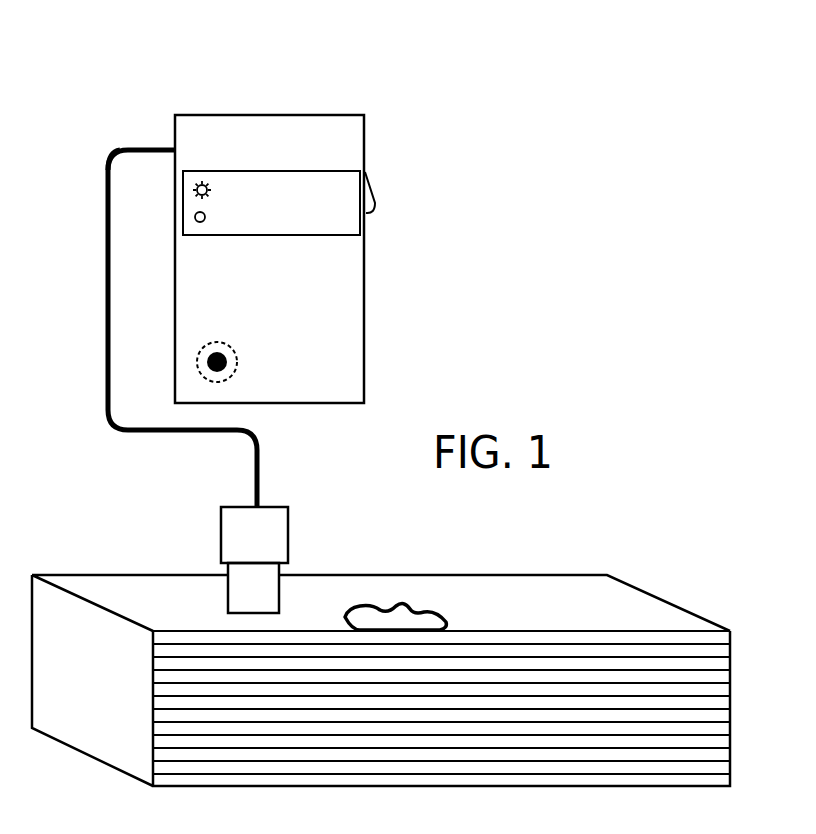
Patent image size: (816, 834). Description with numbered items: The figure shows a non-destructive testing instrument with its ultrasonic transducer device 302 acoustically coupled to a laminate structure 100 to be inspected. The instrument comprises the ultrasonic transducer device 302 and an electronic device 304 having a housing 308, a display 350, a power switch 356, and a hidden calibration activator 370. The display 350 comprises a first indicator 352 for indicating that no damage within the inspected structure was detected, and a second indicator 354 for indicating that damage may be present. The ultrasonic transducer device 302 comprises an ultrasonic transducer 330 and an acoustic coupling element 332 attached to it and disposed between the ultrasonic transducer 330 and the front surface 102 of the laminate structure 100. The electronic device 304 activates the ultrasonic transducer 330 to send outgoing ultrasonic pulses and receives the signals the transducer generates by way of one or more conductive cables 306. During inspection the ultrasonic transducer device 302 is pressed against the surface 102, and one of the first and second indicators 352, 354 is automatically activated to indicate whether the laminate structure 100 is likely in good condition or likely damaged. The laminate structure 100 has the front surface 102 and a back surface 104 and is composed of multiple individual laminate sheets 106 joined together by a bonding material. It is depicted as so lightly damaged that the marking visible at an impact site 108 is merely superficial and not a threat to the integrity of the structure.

The laminate structure 100 is at (381, 662).
The front surface 102 is at (647, 610).
The back surface 104 is at (639, 790).
The laminate sheets 106 is at (153, 650).
The impact site 108 is at (403, 619).
The ultrasonic transducer device 302 is at (261, 520).
The electronic device 304 is at (150, 128).
The conductive cables 306 is at (105, 290).
The housing 308 is at (366, 318).
The ultrasonic transducer 330 is at (276, 516).
The acoustic coupling element 332 is at (248, 575).
The display 350 is at (336, 171).
The first indicator 352 is at (203, 181).
The second indicator 354 is at (200, 222).
The power switch 356 is at (375, 197).
The hidden calibration activator 370 is at (218, 357).